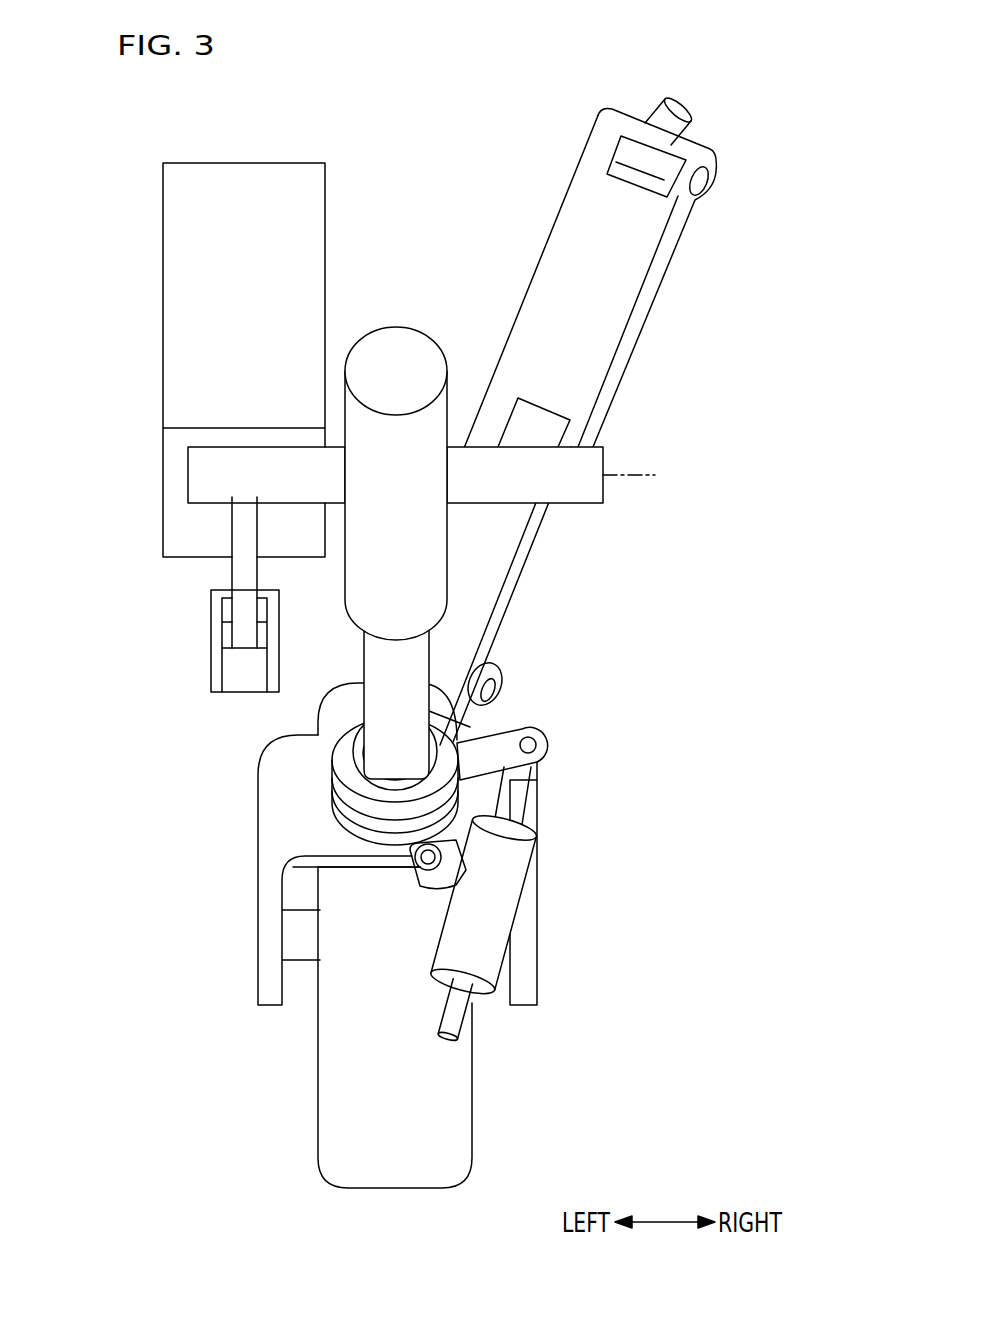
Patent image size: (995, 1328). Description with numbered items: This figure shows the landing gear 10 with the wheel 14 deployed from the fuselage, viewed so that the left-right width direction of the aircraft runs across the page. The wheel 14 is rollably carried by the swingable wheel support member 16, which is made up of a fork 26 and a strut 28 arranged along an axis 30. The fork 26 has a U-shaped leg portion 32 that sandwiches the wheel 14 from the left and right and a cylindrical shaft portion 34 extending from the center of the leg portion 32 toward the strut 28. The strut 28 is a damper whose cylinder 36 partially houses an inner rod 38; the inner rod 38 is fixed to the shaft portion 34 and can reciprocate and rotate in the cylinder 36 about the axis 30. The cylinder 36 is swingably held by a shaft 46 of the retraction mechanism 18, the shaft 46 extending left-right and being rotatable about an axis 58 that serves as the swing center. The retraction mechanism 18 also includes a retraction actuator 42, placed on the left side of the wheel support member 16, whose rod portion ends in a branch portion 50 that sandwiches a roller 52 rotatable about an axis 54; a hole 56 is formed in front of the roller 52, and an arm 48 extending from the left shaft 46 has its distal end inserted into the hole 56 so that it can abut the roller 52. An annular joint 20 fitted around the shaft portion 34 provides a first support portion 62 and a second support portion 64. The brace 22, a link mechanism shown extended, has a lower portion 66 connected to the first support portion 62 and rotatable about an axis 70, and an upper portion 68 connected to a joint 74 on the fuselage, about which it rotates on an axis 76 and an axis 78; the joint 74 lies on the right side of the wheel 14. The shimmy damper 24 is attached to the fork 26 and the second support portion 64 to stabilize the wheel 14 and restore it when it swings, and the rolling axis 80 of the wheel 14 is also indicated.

The landing gear 10 is at (404, 113).
The wheel 14 is at (455, 1125).
The wheel support member 16 is at (502, 518).
The retraction mechanism 18 is at (187, 449).
The joint 20 is at (340, 731).
The brace 22 is at (599, 393).
The shimmy damper 24 is at (515, 848).
The fork 26 is at (341, 844).
The strut 28 is at (502, 553).
The axis 30 is at (396, 370).
The leg portion 32 is at (278, 836).
The shaft portion 34 is at (370, 771).
The cylinder 36 is at (420, 562).
The inner rod 38 is at (408, 660).
The retraction actuator 42 is at (175, 292).
The shaft 46 is at (587, 490).
The arm 48 is at (245, 576).
The branch portion 50 is at (272, 629).
The roller 52 is at (245, 680).
The axis 54 is at (297, 668).
The hole 56 is at (225, 633).
The axis 58 is at (188, 475).
The first support portion 62 is at (505, 682).
The second support portion 64 is at (546, 743).
The lower portion 66 is at (493, 527).
The upper portion 68 is at (642, 255).
The axis 70 is at (440, 670).
The joint 74 is at (665, 110).
The axis 76 is at (580, 133).
The axis 78 is at (605, 202).
The rolling axis 80 is at (185, 935).